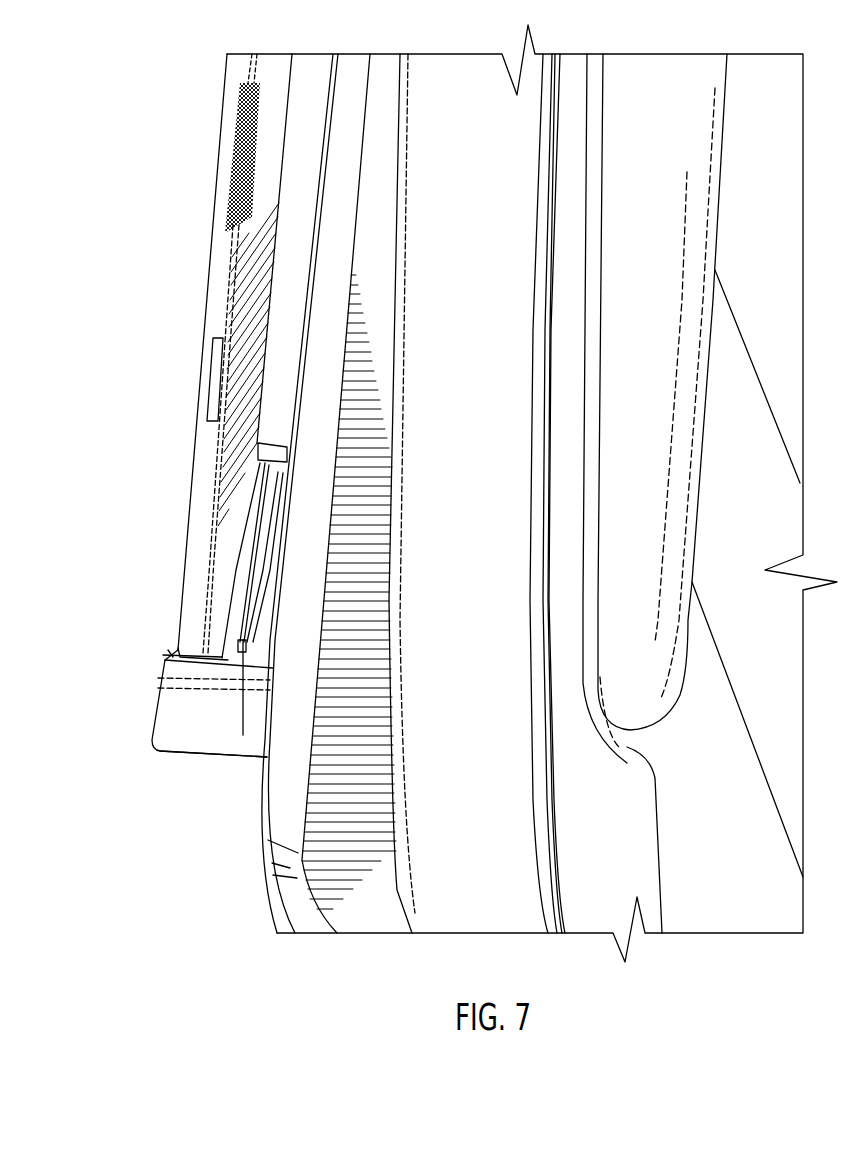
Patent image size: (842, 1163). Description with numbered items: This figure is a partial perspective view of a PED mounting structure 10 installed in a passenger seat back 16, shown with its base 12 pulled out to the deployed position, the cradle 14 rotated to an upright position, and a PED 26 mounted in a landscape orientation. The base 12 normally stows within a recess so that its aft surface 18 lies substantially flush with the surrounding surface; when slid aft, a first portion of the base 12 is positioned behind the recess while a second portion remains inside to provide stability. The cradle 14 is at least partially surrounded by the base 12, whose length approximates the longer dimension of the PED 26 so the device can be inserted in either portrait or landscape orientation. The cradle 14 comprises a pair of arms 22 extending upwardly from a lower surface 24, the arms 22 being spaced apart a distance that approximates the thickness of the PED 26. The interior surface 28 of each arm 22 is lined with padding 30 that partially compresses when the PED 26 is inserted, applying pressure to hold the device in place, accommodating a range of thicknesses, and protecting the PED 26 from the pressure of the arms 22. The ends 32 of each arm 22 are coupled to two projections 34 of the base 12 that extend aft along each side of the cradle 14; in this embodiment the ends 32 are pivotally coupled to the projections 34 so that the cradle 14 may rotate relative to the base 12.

The PED mounting structure 10 is at (190, 743).
The base 12 is at (245, 730).
The cradle 14 is at (178, 597).
The passenger seat back 16 is at (367, 162).
The aft surface 18 is at (157, 683).
The arms 22 is at (172, 630).
The lower surface 24 is at (260, 505).
The PED 26 is at (222, 207).
The interior surface 28 is at (253, 560).
The padding 30 is at (260, 517).
The ends 32 is at (225, 662).
The projections 34 is at (270, 447).